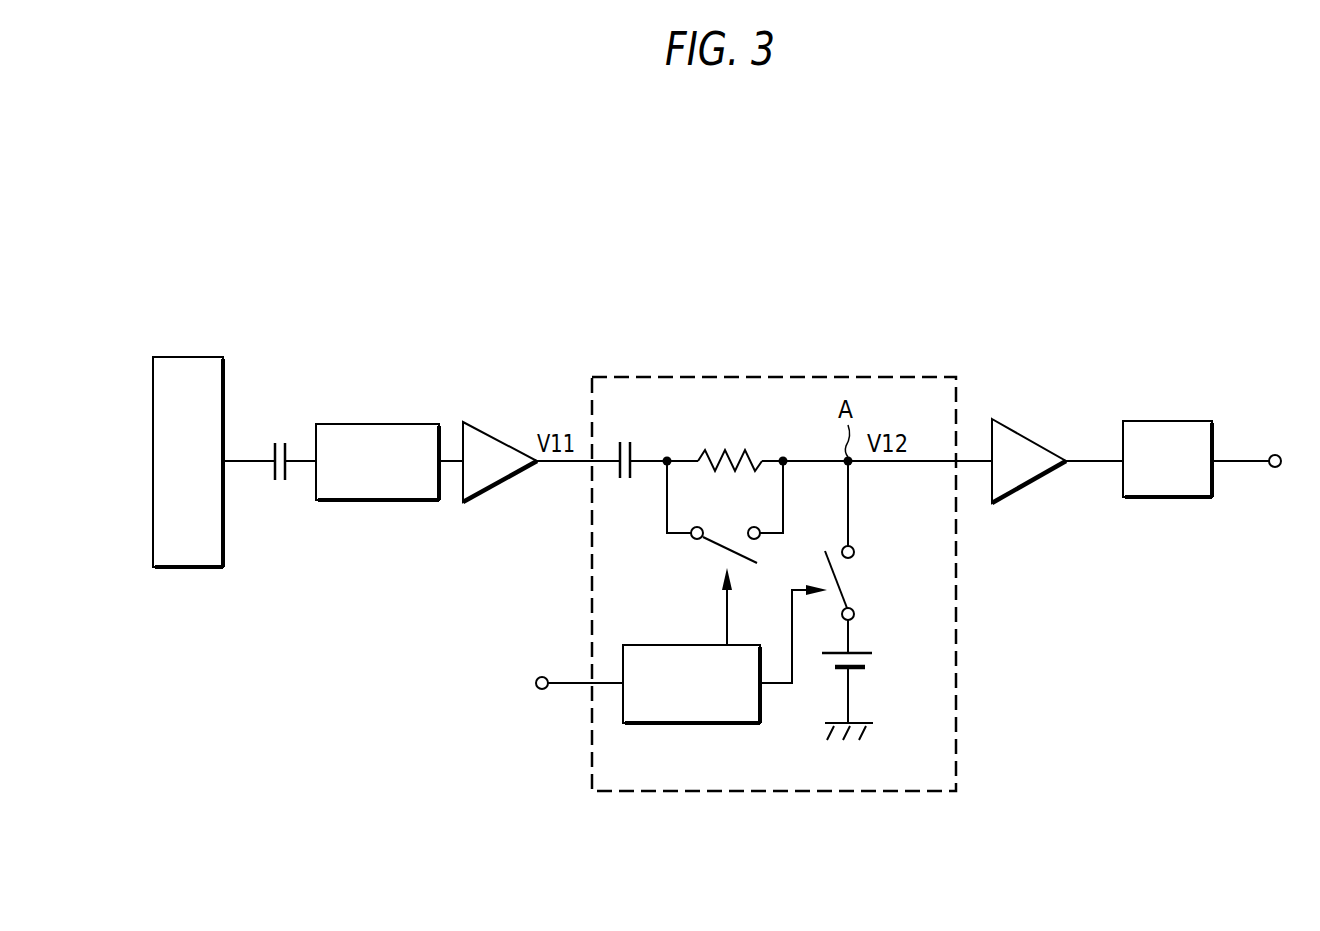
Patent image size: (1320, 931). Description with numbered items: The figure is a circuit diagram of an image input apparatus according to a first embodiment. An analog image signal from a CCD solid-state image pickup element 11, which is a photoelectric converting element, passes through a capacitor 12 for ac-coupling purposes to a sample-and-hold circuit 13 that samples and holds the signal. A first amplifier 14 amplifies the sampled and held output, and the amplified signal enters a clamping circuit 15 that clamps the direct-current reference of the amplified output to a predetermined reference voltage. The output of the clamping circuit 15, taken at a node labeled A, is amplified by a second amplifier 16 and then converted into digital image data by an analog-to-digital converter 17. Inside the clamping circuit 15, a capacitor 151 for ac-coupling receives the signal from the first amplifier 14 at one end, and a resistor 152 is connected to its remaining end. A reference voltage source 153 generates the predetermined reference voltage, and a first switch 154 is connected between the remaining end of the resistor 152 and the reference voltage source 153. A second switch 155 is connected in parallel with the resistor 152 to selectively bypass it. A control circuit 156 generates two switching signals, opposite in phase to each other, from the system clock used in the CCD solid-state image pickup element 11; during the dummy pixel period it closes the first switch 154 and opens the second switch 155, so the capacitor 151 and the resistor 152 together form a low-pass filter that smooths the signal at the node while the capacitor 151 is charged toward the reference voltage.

The CCD solid-state image pickup element 11 is at (186, 356).
The capacitor 12 is at (282, 432).
The sample-and-hold circuit 13 is at (376, 423).
The first amplifier 14 is at (497, 434).
The clamping circuit 15 is at (726, 376).
The second amplifier 16 is at (1023, 433).
The analog-to-digital converter 17 is at (1166, 420).
The capacitor 151 is at (625, 437).
The resistor 152 is at (726, 449).
The reference voltage source 153 is at (878, 661).
The first switch 154 is at (851, 577).
The second switch 155 is at (733, 540).
The control circuit 156 is at (692, 725).